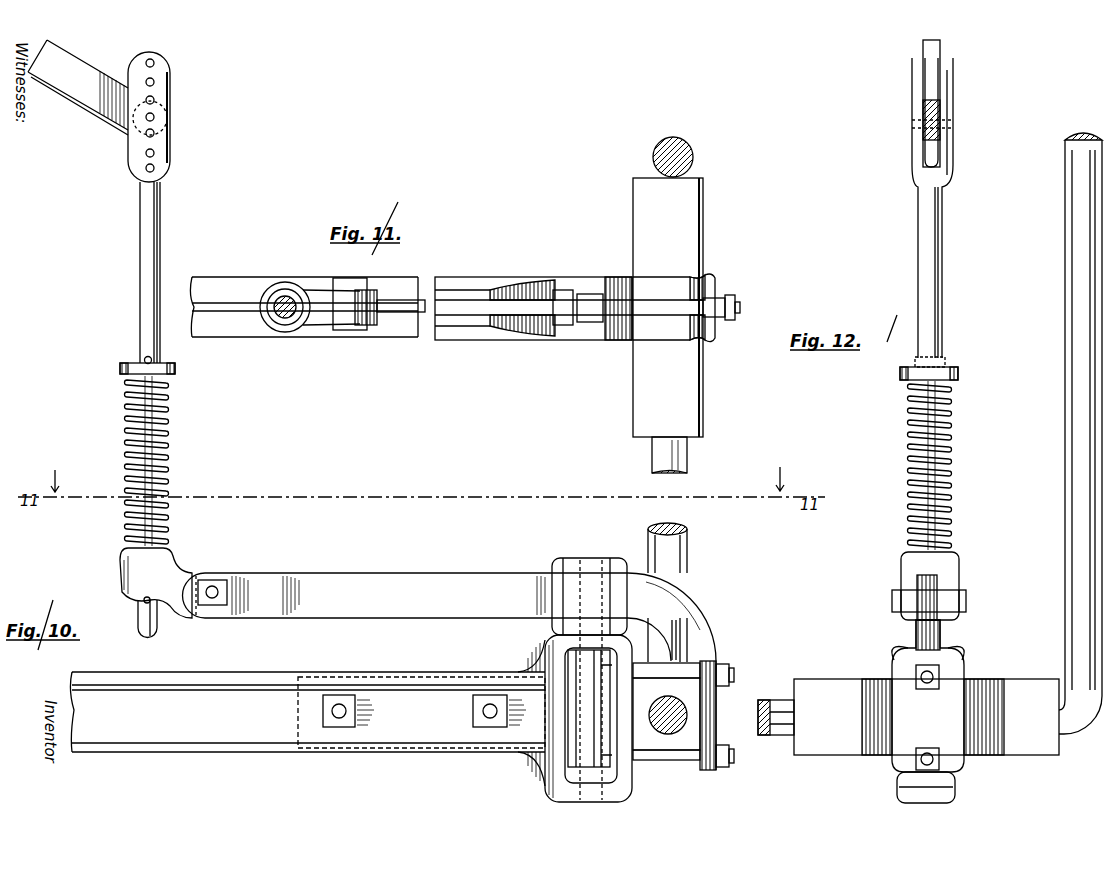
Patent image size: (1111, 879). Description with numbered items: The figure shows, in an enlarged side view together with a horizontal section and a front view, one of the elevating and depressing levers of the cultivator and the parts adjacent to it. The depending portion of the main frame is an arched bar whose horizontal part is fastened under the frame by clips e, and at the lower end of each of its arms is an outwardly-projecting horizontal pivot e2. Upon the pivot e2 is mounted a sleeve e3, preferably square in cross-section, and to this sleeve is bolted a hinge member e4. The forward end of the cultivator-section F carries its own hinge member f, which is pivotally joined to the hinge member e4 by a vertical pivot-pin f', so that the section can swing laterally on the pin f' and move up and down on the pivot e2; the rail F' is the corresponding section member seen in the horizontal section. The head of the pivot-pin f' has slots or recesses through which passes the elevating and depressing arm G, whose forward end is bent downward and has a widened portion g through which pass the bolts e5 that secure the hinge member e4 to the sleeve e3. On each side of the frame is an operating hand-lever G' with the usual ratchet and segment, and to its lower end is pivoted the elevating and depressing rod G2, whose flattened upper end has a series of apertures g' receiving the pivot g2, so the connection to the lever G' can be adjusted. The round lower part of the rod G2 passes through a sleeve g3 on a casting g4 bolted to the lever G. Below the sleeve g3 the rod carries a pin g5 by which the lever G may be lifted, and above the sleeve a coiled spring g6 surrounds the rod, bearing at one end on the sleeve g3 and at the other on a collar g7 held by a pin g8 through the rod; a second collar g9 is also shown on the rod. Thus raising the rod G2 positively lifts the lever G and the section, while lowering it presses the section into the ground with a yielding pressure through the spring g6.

In FIG. 10, the clip e is at (688, 566).
In FIG. 11, the clip e is at (693, 156).
In FIG. 12, the clip e is at (1078, 510).
In FIG. 10, the horizontal pivot e2 is at (682, 702).
In FIG. 12, the horizontal pivot e2 is at (777, 735).
In FIG. 11, the sleeve e3 is at (708, 378).
In FIG. 12, the sleeve e3 is at (926, 702).
In FIG. 10, the hinge member e4 is at (620, 772).
In FIG. 10, the bolt e5 is at (686, 758).
In FIG. 11, the bolt e5 is at (741, 307).
In FIG. 12, the bolt e5 is at (940, 761).
In FIG. 10, the cultivator-section F is at (307, 698).
In FIG. 11, the rail F' is at (304, 293).
In FIG. 10, the hinge member f is at (423, 727).
In FIG. 10, the vertical pivot-pin f' is at (549, 698).
In FIG. 10, the elevating and depressing arm G is at (450, 657).
In FIG. 11, the elevating and depressing arm G is at (569, 291).
In FIG. 10, the operating hand-lever G' is at (78, 96).
In FIG. 12, the operating hand-lever G' is at (917, 103).
In FIG. 10, the elevating and depressing rod G2 is at (148, 258).
In FIG. 11, the elevating and depressing rod G2 is at (286, 316).
In FIG. 12, the elevating and depressing rod G2 is at (932, 282).
In FIG. 10, the widened portion g is at (691, 715).
In FIG. 11, the widened portion g is at (699, 299).
In FIG. 12, the widened portion g is at (928, 711).
In FIG. 10, the aperture g' is at (173, 117).
In FIG. 10, the pivot g2 is at (154, 117).
In FIG. 10, the sleeve g3 is at (122, 560).
In FIG. 10, the casting g4 is at (211, 577).
In FIG. 11, the casting g4 is at (347, 314).
In FIG. 10, the pin g5 is at (137, 602).
In FIG. 10, the coiled spring g6 is at (126, 437).
In FIG. 11, the coiled spring g6 is at (285, 288).
In FIG. 12, the coiled spring g6 is at (951, 423).
In FIG. 10, the collar g7 is at (120, 368).
In FIG. 10, the pin g8 is at (146, 358).
In FIG. 12, the pin g8 is at (945, 362).
In FIG. 12, the collar g9 is at (960, 370).